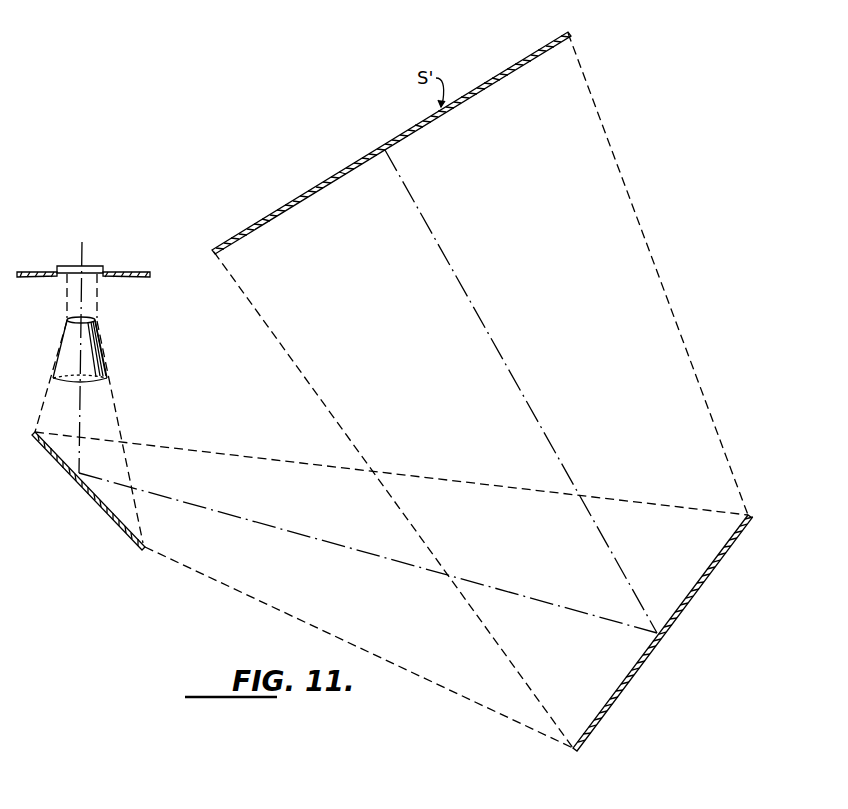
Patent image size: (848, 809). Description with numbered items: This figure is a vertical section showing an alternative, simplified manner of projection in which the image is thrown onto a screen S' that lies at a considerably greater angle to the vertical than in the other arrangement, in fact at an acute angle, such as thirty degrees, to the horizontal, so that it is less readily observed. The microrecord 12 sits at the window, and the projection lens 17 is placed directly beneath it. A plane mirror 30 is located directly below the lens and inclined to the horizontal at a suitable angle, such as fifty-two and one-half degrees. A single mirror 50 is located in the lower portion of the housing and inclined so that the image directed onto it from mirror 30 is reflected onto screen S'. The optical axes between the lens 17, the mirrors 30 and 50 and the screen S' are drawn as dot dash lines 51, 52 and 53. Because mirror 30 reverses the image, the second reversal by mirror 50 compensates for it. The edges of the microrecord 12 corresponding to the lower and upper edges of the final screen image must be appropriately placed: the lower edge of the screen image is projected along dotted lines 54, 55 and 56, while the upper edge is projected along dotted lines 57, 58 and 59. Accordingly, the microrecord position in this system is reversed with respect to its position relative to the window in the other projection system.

The microrecord 12 is at (87, 266).
The projection lens 17 is at (62, 339).
The dot dash line 51 is at (78, 413).
The dotted line 57 is at (44, 401).
The dotted line 54 is at (115, 403).
The plane mirror 30 is at (114, 522).
The dotted line 59 is at (637, 213).
The dot dash line 53 is at (507, 369).
The dotted line 56 is at (304, 360).
The dotted line 58 is at (413, 477).
The dot dash line 52 is at (320, 543).
The dotted line 55 is at (312, 625).
The single mirror 50 is at (682, 612).